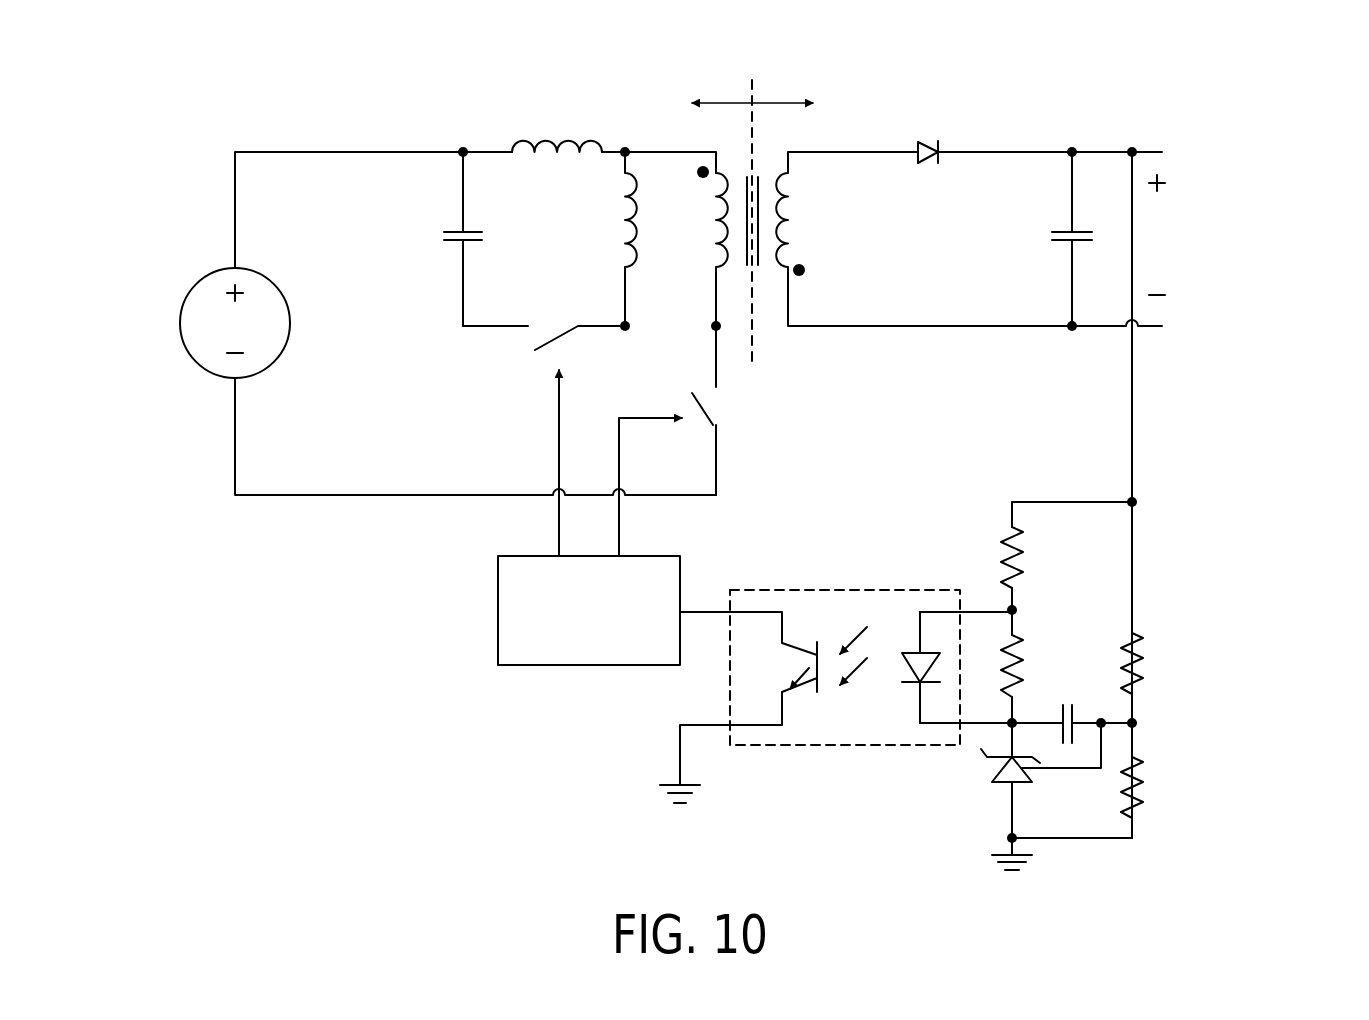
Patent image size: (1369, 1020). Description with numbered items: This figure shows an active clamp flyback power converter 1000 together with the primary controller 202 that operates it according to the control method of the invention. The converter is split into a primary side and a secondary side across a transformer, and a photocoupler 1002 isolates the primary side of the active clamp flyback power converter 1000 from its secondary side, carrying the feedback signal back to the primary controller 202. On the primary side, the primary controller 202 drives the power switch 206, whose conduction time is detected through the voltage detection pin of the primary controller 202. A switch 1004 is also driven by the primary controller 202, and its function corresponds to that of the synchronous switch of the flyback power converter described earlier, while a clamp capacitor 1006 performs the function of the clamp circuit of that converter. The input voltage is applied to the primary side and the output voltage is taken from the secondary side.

The active clamp flyback power converter 1000 is at (1222, 100).
The photocoupler 1002 is at (840, 746).
The switch 1004 is at (567, 320).
The clamp capacitor 1006 is at (452, 232).
The primary controller 202 is at (498, 606).
The power switch 206 is at (718, 422).